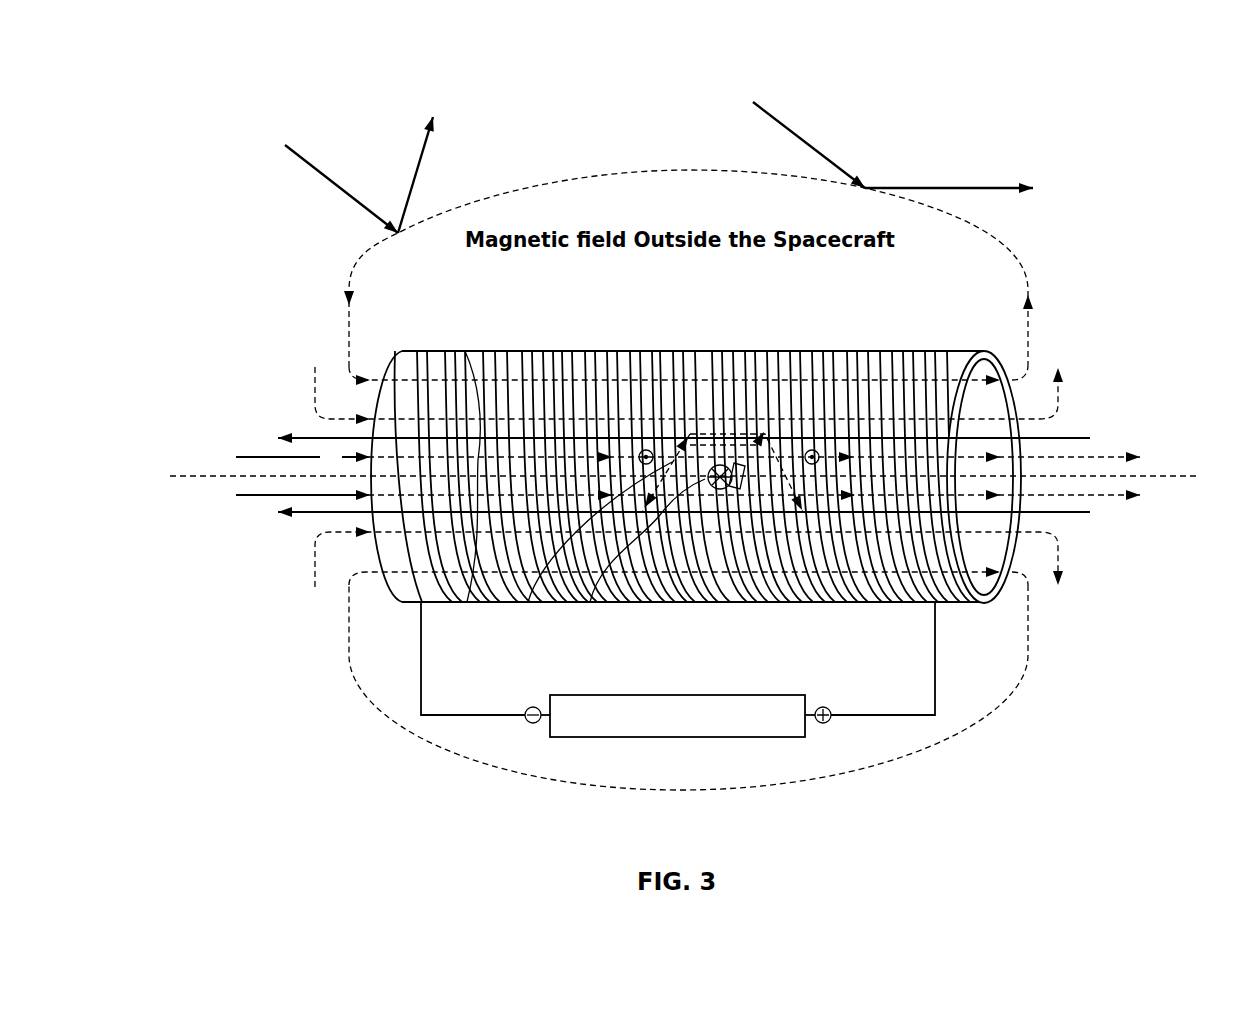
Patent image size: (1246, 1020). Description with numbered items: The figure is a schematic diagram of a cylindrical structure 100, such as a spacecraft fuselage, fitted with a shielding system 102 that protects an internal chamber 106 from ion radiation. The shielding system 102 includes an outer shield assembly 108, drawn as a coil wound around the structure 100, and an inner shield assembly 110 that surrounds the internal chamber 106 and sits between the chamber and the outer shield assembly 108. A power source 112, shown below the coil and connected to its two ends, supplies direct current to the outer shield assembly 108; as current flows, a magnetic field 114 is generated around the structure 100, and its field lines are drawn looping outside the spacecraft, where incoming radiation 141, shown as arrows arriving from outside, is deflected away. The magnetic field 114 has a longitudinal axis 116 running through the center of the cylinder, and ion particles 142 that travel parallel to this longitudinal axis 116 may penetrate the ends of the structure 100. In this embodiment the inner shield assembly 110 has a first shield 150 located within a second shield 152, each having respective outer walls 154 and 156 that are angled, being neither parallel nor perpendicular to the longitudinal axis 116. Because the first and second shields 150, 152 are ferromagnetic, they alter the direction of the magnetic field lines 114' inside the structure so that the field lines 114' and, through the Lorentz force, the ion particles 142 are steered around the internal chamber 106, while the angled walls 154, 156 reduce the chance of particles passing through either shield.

The structure 100 is at (1005, 363).
The shielding system 102 is at (730, 428).
The internal chamber 106 is at (722, 462).
The outer shield assembly 108 is at (523, 352).
The inner shield assembly 110 is at (720, 440).
The power source 112 is at (678, 740).
The magnetic field 114 is at (688, 470).
The magnetic field lines 114' is at (471, 478).
The longitudinal axis 116 is at (213, 476).
The charged particles 141 is at (356, 200).
The ion particles 142 is at (307, 438).
The first shield 150 is at (755, 440).
The second shield 152 is at (590, 602).
The outer wall of first shield 154 is at (701, 602).
The outer wall of second shield 156 is at (528, 602).